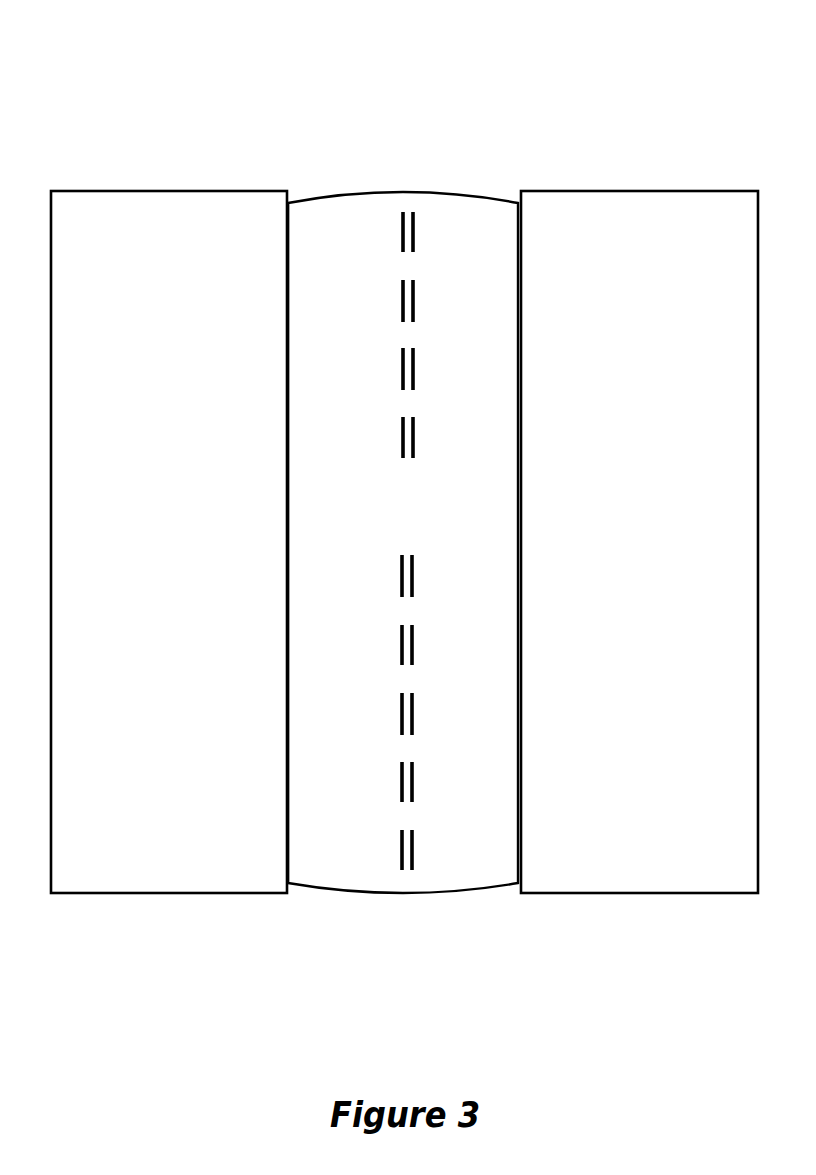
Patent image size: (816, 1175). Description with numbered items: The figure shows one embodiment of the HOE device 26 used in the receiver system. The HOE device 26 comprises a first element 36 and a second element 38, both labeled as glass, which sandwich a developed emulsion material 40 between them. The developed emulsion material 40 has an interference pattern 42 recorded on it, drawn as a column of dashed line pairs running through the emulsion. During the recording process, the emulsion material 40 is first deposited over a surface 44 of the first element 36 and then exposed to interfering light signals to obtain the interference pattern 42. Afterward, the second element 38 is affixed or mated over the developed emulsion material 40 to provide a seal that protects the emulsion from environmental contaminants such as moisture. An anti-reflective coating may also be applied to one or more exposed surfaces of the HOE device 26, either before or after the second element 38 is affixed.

The HOE device 26 is at (645, 114).
The first element 36 is at (175, 868).
The second element 38 is at (645, 872).
The developed emulsion material 40 is at (362, 217).
The interference pattern 42 is at (391, 862).
The surface 44 is at (270, 233).